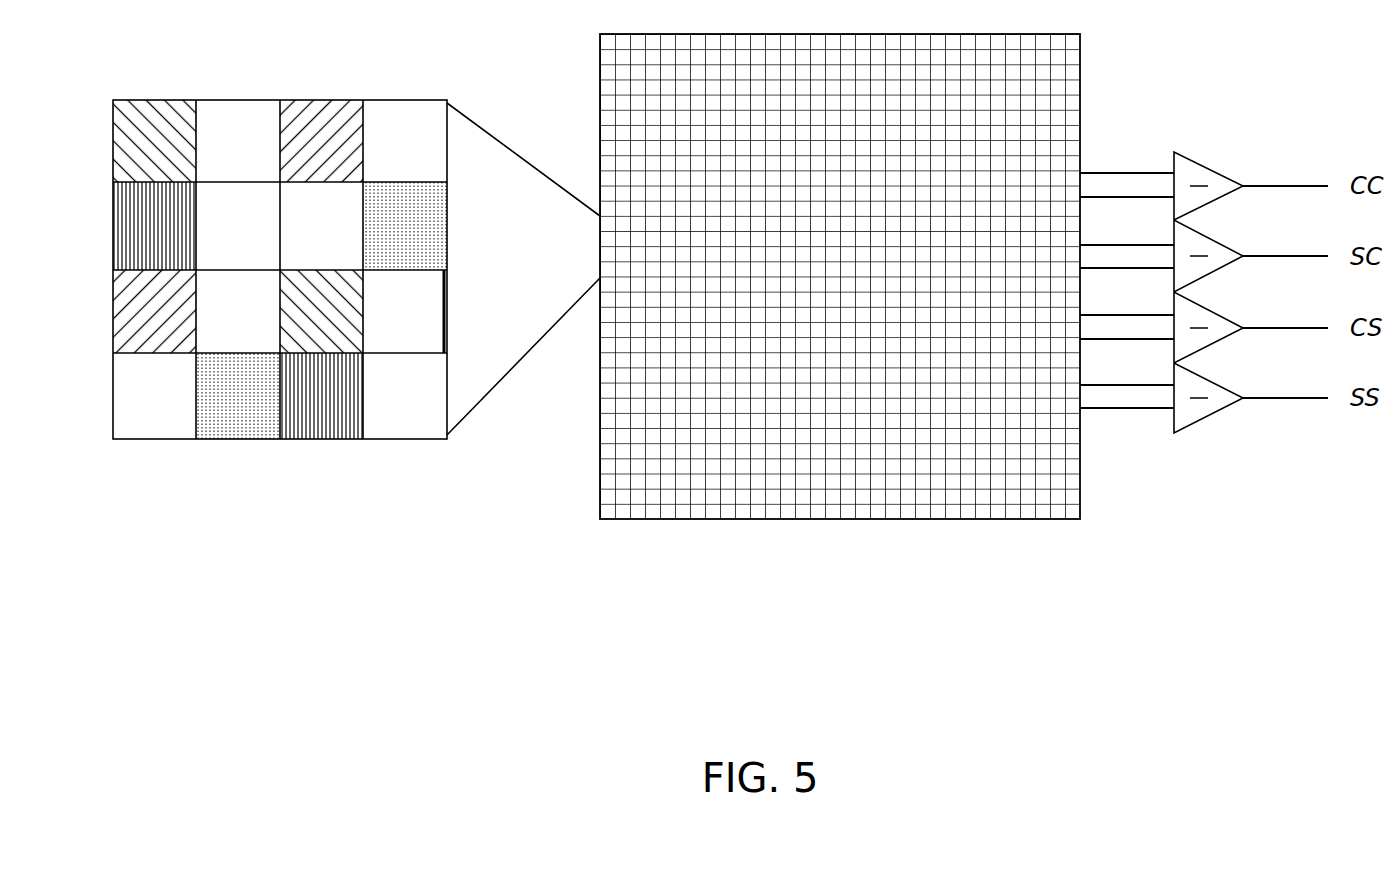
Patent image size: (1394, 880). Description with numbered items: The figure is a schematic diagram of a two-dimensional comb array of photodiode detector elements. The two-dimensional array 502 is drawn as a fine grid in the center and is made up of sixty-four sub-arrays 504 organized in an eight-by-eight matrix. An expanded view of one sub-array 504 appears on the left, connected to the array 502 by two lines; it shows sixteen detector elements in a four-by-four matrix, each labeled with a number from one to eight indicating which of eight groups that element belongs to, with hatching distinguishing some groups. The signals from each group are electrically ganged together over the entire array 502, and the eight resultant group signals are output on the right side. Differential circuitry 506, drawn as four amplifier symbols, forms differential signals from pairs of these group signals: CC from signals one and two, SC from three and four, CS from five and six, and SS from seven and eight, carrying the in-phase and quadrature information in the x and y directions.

The two-dimensional array 502 is at (818, 520).
The sub-array 504 is at (248, 440).
The differential circuitry 506 is at (1197, 153).